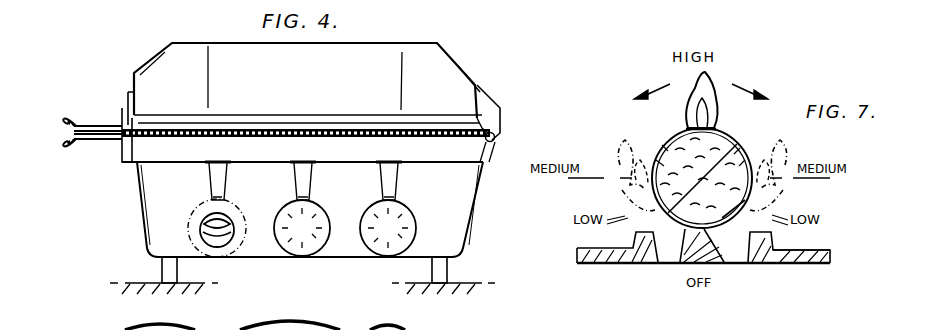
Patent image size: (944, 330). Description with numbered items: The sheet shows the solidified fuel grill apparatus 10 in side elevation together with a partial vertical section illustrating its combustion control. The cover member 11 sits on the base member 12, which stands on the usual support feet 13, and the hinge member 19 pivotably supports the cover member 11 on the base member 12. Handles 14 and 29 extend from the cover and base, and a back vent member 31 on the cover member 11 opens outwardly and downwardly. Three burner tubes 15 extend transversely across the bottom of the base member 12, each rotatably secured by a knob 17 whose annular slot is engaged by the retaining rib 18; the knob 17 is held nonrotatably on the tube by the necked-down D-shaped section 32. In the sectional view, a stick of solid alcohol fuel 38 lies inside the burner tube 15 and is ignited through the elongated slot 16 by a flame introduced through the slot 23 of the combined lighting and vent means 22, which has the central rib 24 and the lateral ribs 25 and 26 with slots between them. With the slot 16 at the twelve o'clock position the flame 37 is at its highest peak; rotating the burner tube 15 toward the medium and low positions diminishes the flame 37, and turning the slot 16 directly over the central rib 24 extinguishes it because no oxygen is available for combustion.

In FIG. 4, the solidified fuel grill apparatus 10 is at (424, 42).
In FIG. 4, the cover member 11 is at (462, 70).
In FIG. 4, the base member 12 is at (140, 196).
In FIG. 7, the base member 12 is at (605, 265).
In FIG. 4, the support feet 13 is at (158, 268).
In FIG. 4, the handle 14 is at (112, 125).
In FIG. 7, the burner tube 15 is at (746, 152).
In FIG. 7, the slot 16 is at (690, 127).
In FIG. 4, the knob 17 is at (400, 256).
In FIG. 4, the retaining rib 18 is at (212, 184).
In FIG. 4, the hinge member 19 is at (487, 150).
In FIG. 7, the combined lighting and vent means 22 is at (675, 267).
In FIG. 7, the slot 23 is at (735, 255).
In FIG. 7, the central rib 24 is at (686, 258).
In FIG. 7, the lateral rib 25 is at (775, 240).
In FIG. 7, the lateral rib 26 is at (625, 243).
In FIG. 4, the handle 29 is at (110, 138).
In FIG. 4, the back vent member 31 is at (492, 106).
In FIG. 4, the D-shaped section 32 is at (200, 236).
In FIG. 7, the flame 37 is at (707, 80).
In FIG. 7, the solid alcohol fuel 38 is at (662, 150).